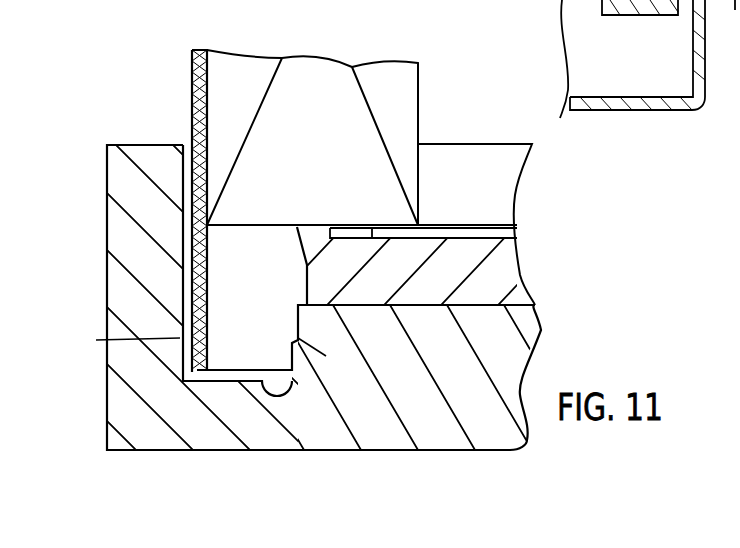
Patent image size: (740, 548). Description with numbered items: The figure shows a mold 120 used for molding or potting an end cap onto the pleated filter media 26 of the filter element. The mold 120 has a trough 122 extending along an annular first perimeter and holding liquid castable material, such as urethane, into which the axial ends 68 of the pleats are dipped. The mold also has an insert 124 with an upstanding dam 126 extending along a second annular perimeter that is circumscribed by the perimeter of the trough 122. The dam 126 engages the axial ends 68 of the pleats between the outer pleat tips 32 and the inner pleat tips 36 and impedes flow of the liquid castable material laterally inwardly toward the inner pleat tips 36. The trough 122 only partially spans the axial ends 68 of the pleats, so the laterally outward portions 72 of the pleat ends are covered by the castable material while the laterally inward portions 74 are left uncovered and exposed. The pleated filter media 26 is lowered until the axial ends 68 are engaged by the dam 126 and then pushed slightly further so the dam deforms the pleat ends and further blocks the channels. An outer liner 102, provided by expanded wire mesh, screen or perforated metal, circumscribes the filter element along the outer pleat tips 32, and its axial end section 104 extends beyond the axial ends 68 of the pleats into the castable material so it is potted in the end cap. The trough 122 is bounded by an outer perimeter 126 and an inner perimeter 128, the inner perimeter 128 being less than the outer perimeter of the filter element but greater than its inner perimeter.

The pleated filter media 26 is at (338, 80).
The outer pleat tips 32 is at (209, 225).
The inner pleat tips 36 is at (423, 223).
The axial ends of the pleats 68 is at (272, 225).
The laterally outward portions of the axial ends of the pleats 72 is at (245, 228).
The laterally inward portions of the axial ends of the pleats 74 is at (372, 238).
The outer liner 102 is at (199, 52).
The axial end section of the outer liner 104 is at (206, 335).
The mold 120 is at (107, 295).
The trough 122 is at (233, 378).
The insert 124 is at (493, 263).
The dam 126 is at (317, 230).
The inner perimeter of trough 128 is at (300, 328).